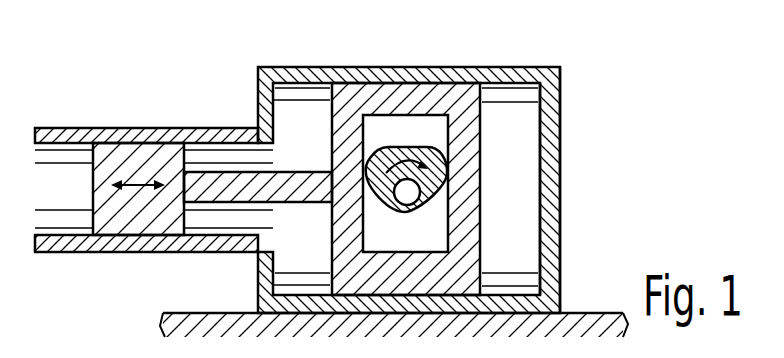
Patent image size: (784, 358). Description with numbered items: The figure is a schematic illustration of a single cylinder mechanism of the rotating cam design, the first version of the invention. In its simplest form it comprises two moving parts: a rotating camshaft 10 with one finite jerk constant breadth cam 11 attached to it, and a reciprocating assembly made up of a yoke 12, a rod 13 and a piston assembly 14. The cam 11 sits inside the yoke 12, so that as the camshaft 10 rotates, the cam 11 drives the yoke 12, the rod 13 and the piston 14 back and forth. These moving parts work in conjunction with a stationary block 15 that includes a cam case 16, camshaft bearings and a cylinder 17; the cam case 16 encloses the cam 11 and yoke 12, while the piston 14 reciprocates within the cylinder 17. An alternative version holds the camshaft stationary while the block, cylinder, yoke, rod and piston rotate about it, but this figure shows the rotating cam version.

The rotating camshaft 10 is at (410, 204).
The finite jerk constant breadth cam 11 is at (400, 147).
The yoke 12 is at (470, 117).
The rod 13 is at (295, 172).
The piston assembly 14 is at (133, 150).
The stationary block 15 is at (262, 62).
The cam case 16 is at (561, 219).
The cylinder 17 is at (70, 218).